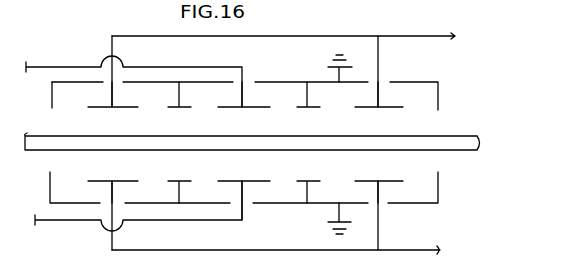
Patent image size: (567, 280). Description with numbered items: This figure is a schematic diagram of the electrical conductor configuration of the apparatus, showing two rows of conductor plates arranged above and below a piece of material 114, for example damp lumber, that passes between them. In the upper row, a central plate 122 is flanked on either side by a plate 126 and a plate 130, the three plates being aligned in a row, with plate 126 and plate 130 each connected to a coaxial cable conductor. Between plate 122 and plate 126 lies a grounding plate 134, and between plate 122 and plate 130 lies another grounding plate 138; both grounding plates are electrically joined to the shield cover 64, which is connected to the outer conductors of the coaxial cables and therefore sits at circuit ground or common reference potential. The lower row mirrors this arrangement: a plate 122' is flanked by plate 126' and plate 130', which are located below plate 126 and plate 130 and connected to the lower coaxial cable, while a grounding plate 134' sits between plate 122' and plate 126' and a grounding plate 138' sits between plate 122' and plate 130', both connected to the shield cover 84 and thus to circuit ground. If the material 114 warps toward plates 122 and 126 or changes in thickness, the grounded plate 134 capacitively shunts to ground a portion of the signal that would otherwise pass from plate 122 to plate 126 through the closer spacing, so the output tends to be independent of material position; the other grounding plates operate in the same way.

The shield cover 64 is at (438, 95).
The shield cover 84 is at (438, 185).
The material 114 is at (463, 135).
The plate 126 is at (97, 95).
The plate 134 is at (188, 107).
The plate 122 is at (253, 107).
The grounding plate 138 is at (327, 95).
The plate 130 is at (396, 94).
The plate 126' is at (97, 182).
The plate 134' is at (169, 182).
The plate 122' is at (244, 190).
The plate 138' is at (316, 182).
The plate 130' is at (393, 182).